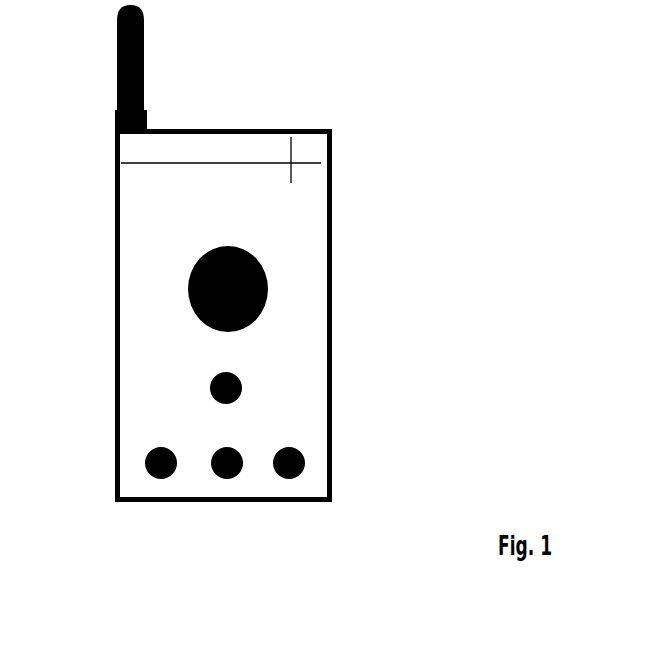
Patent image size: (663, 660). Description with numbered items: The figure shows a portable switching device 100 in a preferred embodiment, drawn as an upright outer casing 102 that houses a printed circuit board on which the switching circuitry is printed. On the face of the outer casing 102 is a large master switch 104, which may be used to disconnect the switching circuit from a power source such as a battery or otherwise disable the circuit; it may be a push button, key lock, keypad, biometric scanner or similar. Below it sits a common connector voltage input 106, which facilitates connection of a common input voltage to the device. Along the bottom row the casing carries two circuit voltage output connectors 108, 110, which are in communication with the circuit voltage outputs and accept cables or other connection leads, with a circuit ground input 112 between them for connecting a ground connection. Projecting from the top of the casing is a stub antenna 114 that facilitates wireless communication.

The portable switching device 100 is at (228, 279).
The outer casing 102 is at (345, 150).
The master switch 104 is at (188, 290).
The common connector voltage input 106 is at (248, 389).
The circuit voltage output connector 108 is at (142, 470).
The circuit voltage output connector 110 is at (312, 468).
The circuit ground input 112 is at (226, 487).
The antenna 114 is at (145, 68).